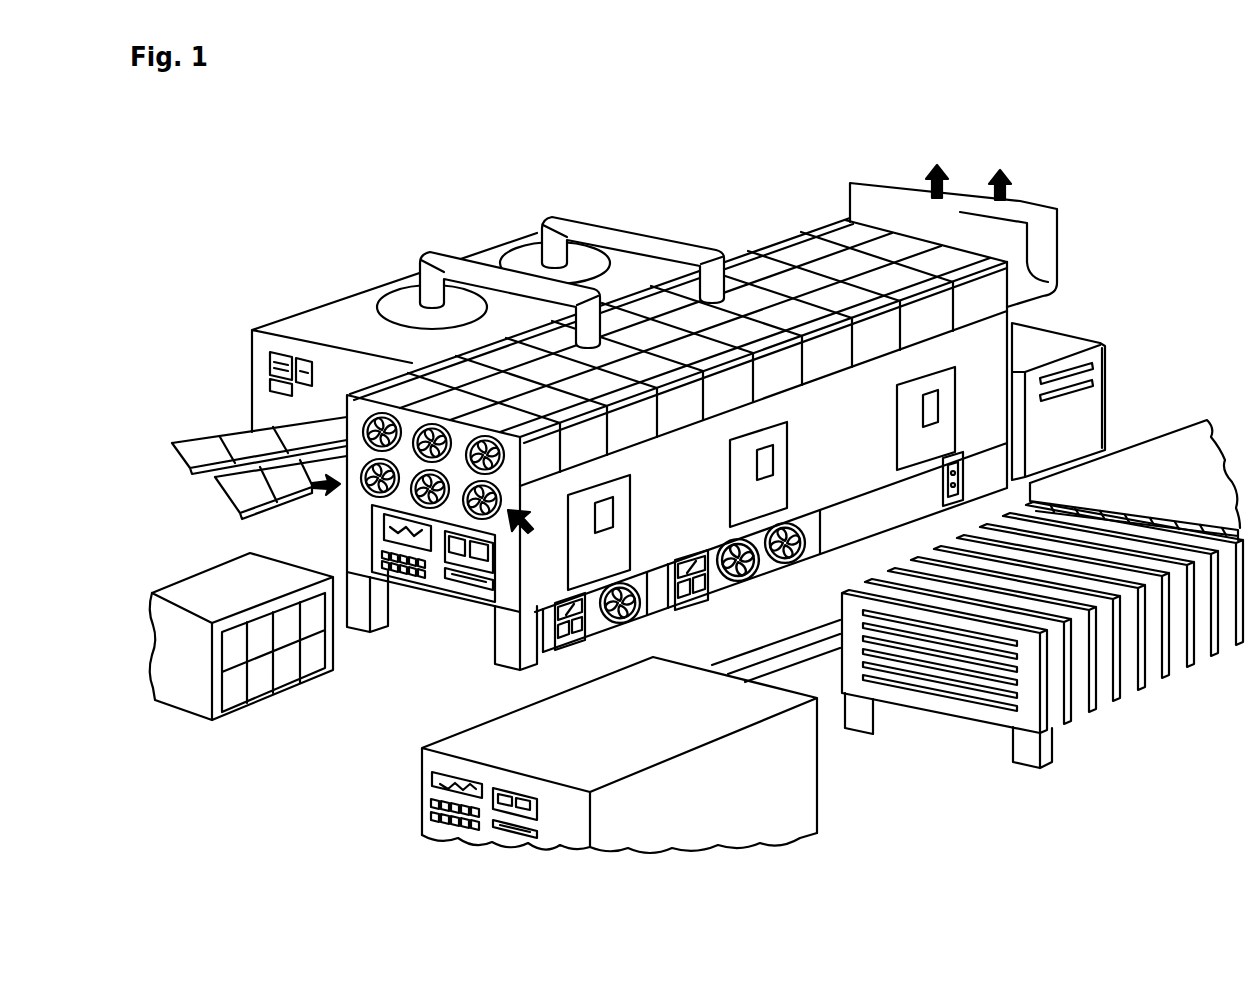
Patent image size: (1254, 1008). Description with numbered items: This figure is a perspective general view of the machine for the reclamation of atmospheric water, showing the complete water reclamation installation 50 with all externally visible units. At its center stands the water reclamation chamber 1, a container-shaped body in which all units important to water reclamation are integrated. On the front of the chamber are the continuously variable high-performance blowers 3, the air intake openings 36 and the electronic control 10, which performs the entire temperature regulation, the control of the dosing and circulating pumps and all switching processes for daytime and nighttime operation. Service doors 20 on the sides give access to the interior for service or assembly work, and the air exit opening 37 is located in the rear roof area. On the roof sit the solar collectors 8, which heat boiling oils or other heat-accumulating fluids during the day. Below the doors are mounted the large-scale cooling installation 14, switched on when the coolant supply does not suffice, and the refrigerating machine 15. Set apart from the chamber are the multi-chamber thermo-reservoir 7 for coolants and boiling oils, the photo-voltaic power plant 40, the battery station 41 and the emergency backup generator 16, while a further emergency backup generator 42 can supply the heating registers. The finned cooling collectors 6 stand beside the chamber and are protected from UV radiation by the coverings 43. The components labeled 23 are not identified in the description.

The water reclamation installation 50 is at (228, 241).
The water reclamation chamber 1 is at (360, 522).
The continuously variable high-performance blowers 3 is at (472, 436).
The air intake openings 36 is at (383, 413).
The electronic control 10 is at (438, 576).
The multi-chamber thermo-reservoir 7 is at (338, 335).
The solar collectors 8 is at (805, 291).
The handles / pipes 23 is at (447, 272).
The air exit opening 37 is at (980, 196).
The photo-voltaic power plant 40 is at (235, 435).
The battery station 41 is at (222, 595).
The service doors 20 is at (580, 563).
The emergency backup generator 16 is at (858, 516).
The refrigerating machine 15 is at (600, 627).
The large-scale cooling installation 14 is at (718, 578).
The cooling collectors 6 is at (993, 682).
The emergency backup generator 42 is at (1052, 445).
The coverings 43 is at (1122, 487).